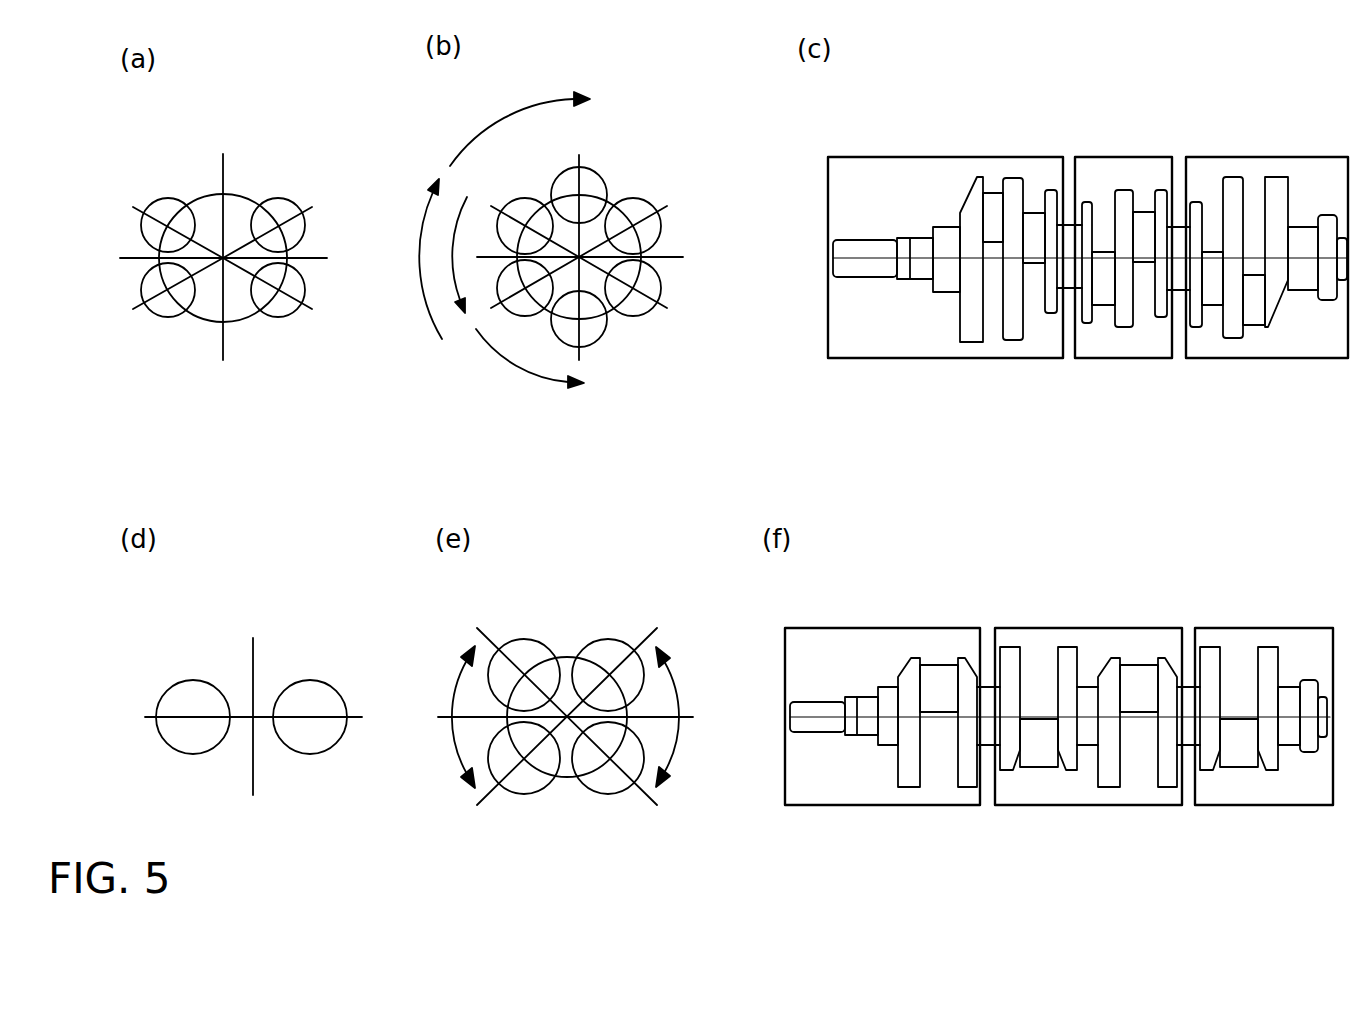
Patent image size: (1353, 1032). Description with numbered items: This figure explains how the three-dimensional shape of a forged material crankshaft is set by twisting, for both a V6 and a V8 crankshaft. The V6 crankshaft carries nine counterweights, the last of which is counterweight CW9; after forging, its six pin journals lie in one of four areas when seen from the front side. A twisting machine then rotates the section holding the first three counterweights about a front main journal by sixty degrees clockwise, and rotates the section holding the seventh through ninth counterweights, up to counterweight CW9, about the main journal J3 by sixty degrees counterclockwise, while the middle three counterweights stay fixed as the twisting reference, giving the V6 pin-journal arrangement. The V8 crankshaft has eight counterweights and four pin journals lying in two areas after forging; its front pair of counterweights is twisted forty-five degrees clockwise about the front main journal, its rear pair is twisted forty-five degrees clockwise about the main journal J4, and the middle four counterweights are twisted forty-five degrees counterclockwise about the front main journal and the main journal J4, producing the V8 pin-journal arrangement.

The counterweight CW9 is at (1278, 200).
The main journal J3 is at (1182, 240).
The main journal J4 is at (1188, 728).